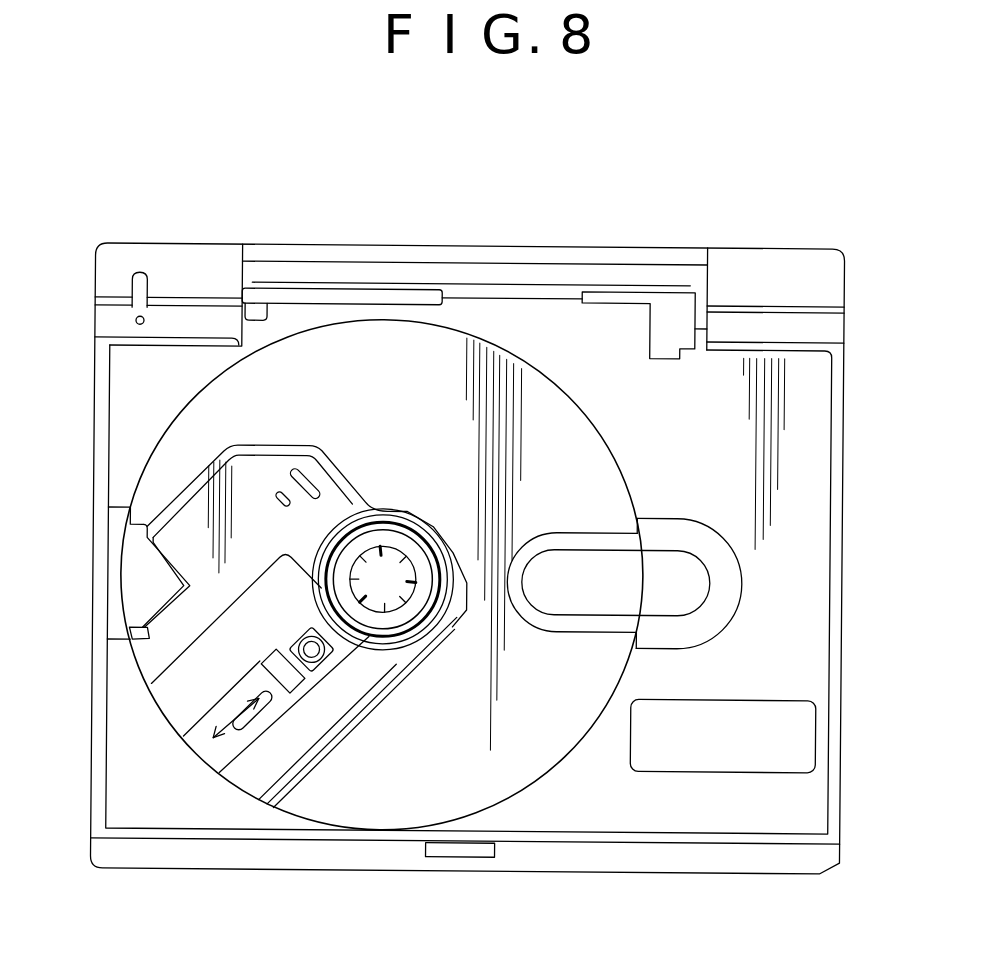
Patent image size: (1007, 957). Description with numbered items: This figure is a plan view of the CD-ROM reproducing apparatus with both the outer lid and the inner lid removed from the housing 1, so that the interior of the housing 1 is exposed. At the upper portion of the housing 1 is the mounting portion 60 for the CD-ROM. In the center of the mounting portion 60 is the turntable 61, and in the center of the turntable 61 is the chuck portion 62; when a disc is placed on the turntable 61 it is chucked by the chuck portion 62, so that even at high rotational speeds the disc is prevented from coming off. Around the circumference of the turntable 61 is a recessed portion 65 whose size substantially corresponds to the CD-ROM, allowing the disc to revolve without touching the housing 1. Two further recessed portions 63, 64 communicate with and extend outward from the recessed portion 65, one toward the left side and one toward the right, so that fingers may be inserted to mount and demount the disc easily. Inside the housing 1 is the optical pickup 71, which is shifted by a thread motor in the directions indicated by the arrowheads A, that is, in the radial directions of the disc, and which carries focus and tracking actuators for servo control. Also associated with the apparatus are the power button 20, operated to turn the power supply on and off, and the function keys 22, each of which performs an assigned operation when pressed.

The housing 1 is at (846, 386).
The power button 20 is at (451, 857).
The function keys 22 is at (138, 275).
The mounting portion 60 is at (772, 531).
The turntable 61 is at (430, 568).
The chuck portion 62 is at (383, 578).
The recessed portion 63 is at (125, 586).
The recessed portion 64 is at (660, 573).
The recessed portion 65 is at (527, 752).
The optical pickup 71 is at (325, 660).
The arrowheads A is at (230, 727).